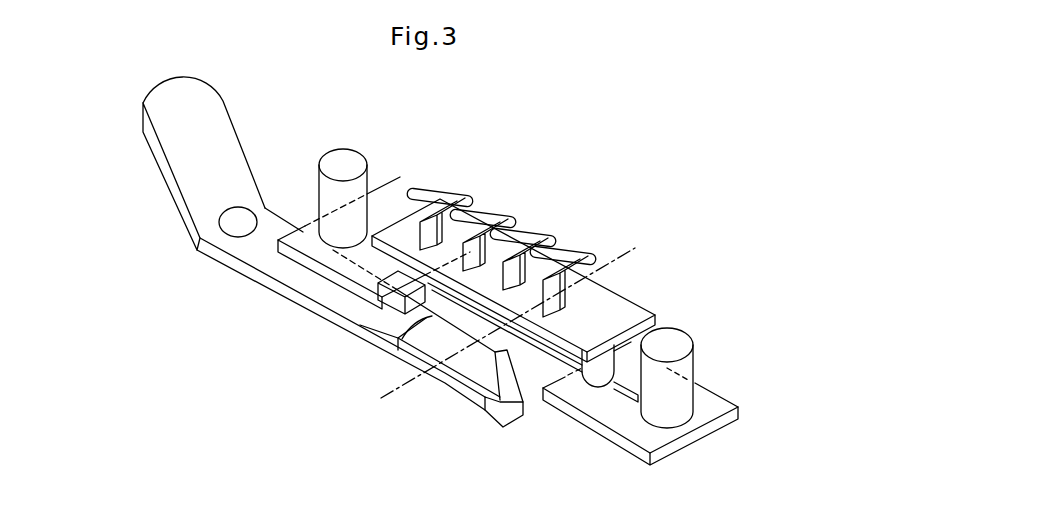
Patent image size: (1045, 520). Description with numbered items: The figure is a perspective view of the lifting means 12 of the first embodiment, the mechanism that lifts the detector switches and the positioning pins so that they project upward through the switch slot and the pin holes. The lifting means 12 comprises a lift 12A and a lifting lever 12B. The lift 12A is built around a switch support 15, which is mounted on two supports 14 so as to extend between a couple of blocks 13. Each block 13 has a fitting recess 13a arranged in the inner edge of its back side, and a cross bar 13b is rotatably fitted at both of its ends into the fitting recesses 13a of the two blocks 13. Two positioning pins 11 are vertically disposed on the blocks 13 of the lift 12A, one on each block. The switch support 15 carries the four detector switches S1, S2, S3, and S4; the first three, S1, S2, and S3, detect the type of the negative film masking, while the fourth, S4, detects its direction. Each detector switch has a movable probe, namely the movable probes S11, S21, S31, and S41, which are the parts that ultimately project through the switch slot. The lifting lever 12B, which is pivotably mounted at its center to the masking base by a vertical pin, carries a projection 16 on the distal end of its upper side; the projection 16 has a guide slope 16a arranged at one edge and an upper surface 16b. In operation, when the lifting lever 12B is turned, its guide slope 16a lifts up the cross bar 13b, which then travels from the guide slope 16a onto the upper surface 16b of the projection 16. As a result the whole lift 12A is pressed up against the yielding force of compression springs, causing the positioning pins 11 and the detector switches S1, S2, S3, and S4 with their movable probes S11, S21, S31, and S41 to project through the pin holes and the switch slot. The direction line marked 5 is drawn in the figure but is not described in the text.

The axis direction of sensor arrangement 5 is at (637, 249).
The positioning pin 11 is at (330, 158).
The lifting means 12 is at (168, 366).
The lift 12A is at (346, 297).
The lifting lever 12B is at (171, 205).
The block 13 is at (307, 217).
The fitting recess 13a is at (408, 300).
The cross bar 13b is at (540, 362).
The support 14 is at (378, 286).
The switch support 15 is at (637, 310).
The projection 16 is at (481, 383).
The guide slope 16a is at (396, 345).
The upper surface 16b is at (503, 405).
The detector switch S1 is at (468, 195).
The movable probe S11 is at (423, 187).
The detector switch S2 is at (500, 222).
The movable probe S21 is at (483, 205).
The detector switch S3 is at (542, 228).
The movable probe S31 is at (527, 227).
The detector switch S4 is at (548, 289).
The movable probe S41 is at (567, 258).